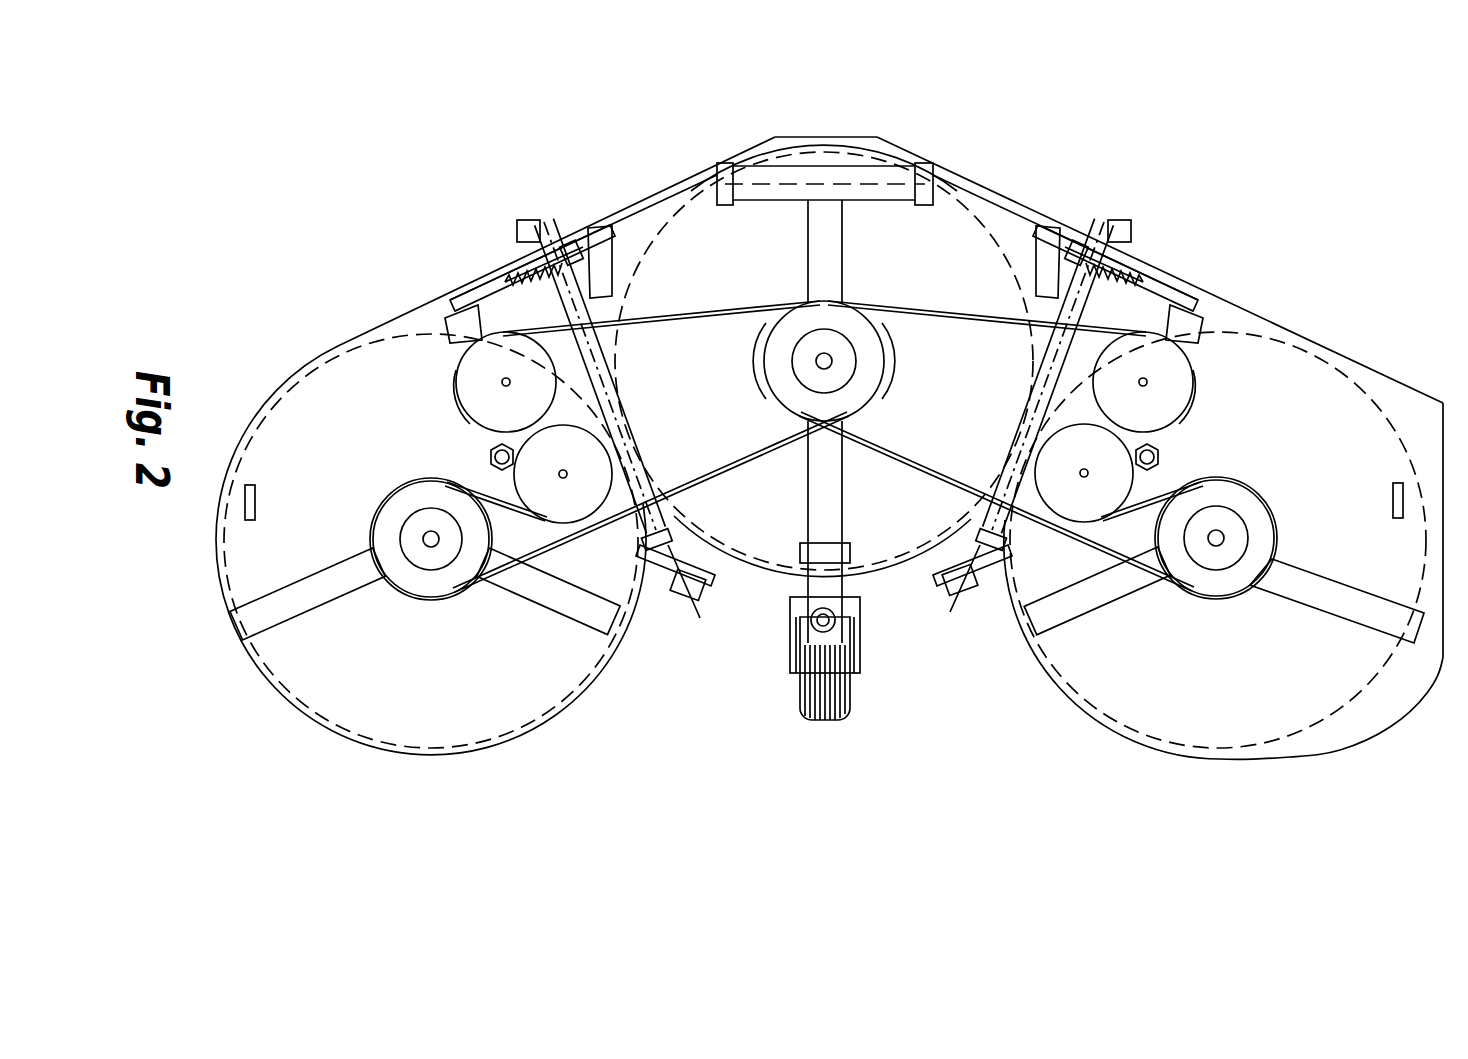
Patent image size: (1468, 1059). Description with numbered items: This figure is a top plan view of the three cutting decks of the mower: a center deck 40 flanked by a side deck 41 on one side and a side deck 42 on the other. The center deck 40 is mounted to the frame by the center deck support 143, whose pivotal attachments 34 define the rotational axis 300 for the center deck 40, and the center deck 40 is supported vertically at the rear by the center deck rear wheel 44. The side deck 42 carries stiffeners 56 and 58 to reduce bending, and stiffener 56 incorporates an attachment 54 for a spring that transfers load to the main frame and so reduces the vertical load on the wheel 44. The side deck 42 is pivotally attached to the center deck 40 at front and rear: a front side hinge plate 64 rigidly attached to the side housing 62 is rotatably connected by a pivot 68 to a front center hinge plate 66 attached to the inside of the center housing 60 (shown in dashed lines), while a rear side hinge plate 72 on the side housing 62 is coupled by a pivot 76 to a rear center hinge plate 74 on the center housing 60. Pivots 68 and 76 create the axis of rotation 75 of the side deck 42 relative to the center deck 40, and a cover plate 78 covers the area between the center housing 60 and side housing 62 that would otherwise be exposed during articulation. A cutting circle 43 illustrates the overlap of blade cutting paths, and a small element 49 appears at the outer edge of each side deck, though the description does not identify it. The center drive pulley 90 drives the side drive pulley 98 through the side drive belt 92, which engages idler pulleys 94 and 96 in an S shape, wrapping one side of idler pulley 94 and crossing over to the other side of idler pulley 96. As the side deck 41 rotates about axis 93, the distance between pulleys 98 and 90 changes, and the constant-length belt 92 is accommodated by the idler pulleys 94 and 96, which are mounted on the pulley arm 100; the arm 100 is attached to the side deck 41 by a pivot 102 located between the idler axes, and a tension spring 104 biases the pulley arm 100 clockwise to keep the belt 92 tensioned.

The pivotal attachments 34 is at (870, 180).
The center deck 40 is at (933, 262).
The side deck 41 is at (355, 392).
The side deck 42 is at (1311, 368).
The cutting circle 43 is at (1340, 368).
The center deck rear wheel 44 is at (815, 685).
The vent slot 49 is at (250, 522).
The attachment 54 is at (1048, 662).
The stiffener 56 is at (1087, 597).
The stiffener 58 is at (1350, 593).
The center housing 60 is at (1003, 180).
The side housing 62 is at (1238, 308).
The front side hinge plate 64 is at (1152, 278).
The front center hinge plate 66 is at (1040, 228).
The pivot 68 is at (1122, 218).
The rear side hinge plate 72 is at (990, 553).
The rear center hinge plate 74 is at (927, 557).
The axis of rotation 75 is at (955, 600).
The pivot 76 is at (945, 592).
The cover plate 78 is at (1098, 316).
The center drive pulley 90 is at (793, 327).
The side drive belt 92 is at (590, 250).
The axis 93 is at (528, 220).
The idler pulley 94 is at (456, 400).
The idler pulley 96 is at (567, 482).
The side drive pulley 98 is at (385, 530).
The pulley arm 100 is at (495, 446).
The pivot 102 is at (489, 545).
The tension spring 104 is at (487, 272).
The center deck support 143 is at (762, 176).
The rotational axis 300 is at (716, 176).